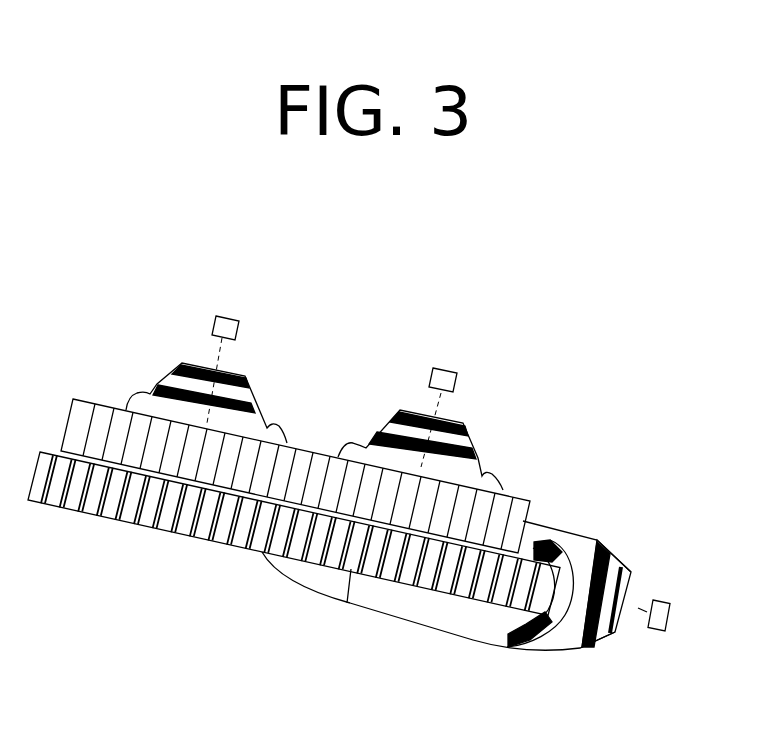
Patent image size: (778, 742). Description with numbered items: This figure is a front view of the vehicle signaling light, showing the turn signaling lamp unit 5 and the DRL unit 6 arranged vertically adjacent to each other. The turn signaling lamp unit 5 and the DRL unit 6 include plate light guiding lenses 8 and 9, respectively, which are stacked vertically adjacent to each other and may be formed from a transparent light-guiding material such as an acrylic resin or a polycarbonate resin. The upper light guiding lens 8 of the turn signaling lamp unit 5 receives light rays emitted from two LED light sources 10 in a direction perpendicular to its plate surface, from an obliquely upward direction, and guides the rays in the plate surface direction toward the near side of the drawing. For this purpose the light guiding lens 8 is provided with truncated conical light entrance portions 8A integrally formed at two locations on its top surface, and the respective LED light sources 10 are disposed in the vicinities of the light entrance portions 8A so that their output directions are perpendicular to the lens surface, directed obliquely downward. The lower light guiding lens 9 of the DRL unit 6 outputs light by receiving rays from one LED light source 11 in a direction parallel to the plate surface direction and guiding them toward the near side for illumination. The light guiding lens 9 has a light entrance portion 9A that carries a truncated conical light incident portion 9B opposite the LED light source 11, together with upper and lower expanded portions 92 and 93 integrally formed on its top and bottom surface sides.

The turn signaling lamp unit 5 is at (313, 452).
The DRL unit 6 is at (150, 535).
The plate light guiding lens 8 is at (510, 510).
The light entrance portions 8A is at (163, 388).
The light guiding lens 9 is at (228, 542).
The light entrance portion 9A is at (473, 641).
The light incident portion 9B is at (600, 641).
The LED light sources 10 is at (233, 314).
The LED light source 11 is at (670, 604).
The upper expanded portion 92 is at (563, 532).
The lower expanded portion 93 is at (367, 600).